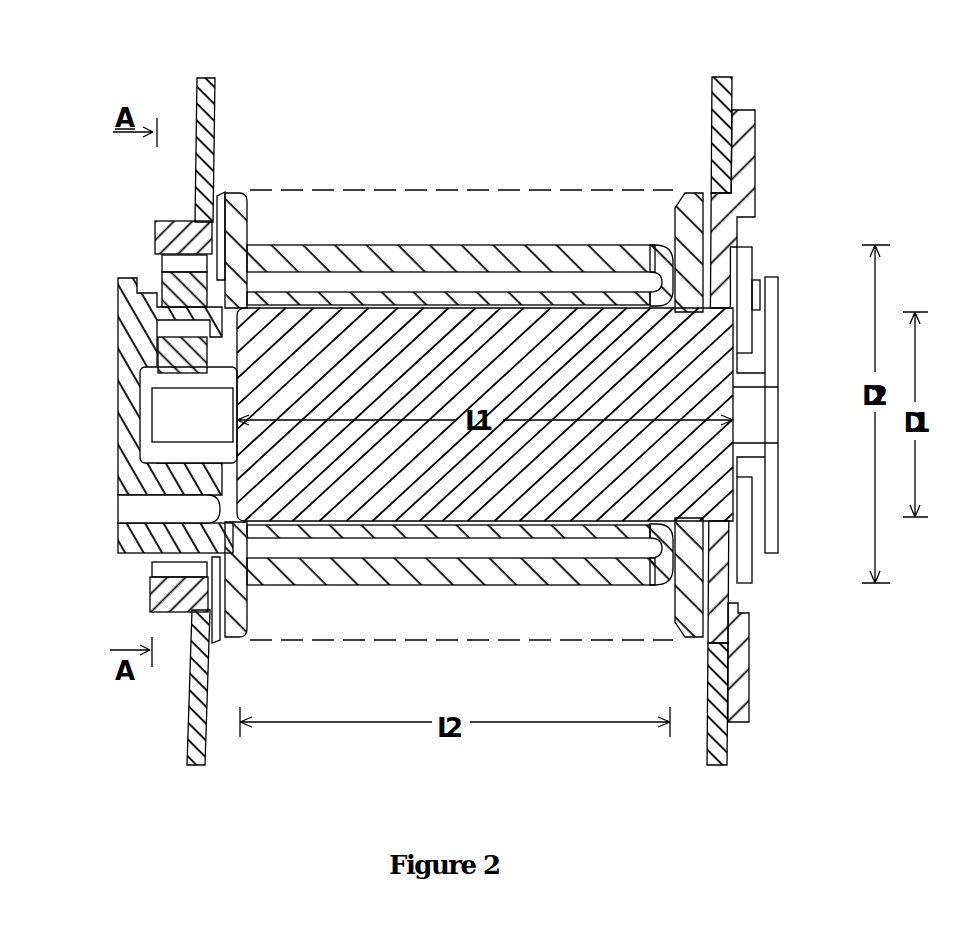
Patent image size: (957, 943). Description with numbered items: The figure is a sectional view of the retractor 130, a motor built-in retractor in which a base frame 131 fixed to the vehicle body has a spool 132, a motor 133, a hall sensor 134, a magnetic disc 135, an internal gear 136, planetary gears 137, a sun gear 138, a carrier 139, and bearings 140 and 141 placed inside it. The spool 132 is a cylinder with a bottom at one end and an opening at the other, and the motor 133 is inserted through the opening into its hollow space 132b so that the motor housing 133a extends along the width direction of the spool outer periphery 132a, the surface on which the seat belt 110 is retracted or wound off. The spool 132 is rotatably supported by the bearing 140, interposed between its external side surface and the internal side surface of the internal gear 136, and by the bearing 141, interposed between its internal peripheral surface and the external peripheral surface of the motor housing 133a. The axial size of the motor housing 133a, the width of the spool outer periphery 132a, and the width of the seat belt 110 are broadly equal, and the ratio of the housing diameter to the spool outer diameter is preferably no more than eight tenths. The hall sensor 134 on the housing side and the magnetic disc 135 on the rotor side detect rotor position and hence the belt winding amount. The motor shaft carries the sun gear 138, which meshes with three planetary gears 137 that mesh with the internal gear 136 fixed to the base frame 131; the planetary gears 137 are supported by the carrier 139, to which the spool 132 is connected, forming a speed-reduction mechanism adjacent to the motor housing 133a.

The seat belt 110 is at (347, 215).
The retractor 130 is at (640, 62).
The base frame 131 is at (217, 92).
The spool 132 is at (464, 378).
The spool outer periphery 132a is at (413, 245).
The hollow space 132b is at (503, 305).
The motor 133 is at (544, 421).
The motor housing 133a is at (622, 318).
The hall sensor 134 is at (758, 297).
The magnetic disc 135 is at (773, 330).
The internal gear 136 is at (140, 220).
The planetary gears 137 is at (160, 290).
The sun gear 138 is at (170, 421).
The carrier 139 is at (104, 322).
The bearing 140 is at (231, 190).
The bearing 141 is at (705, 300).